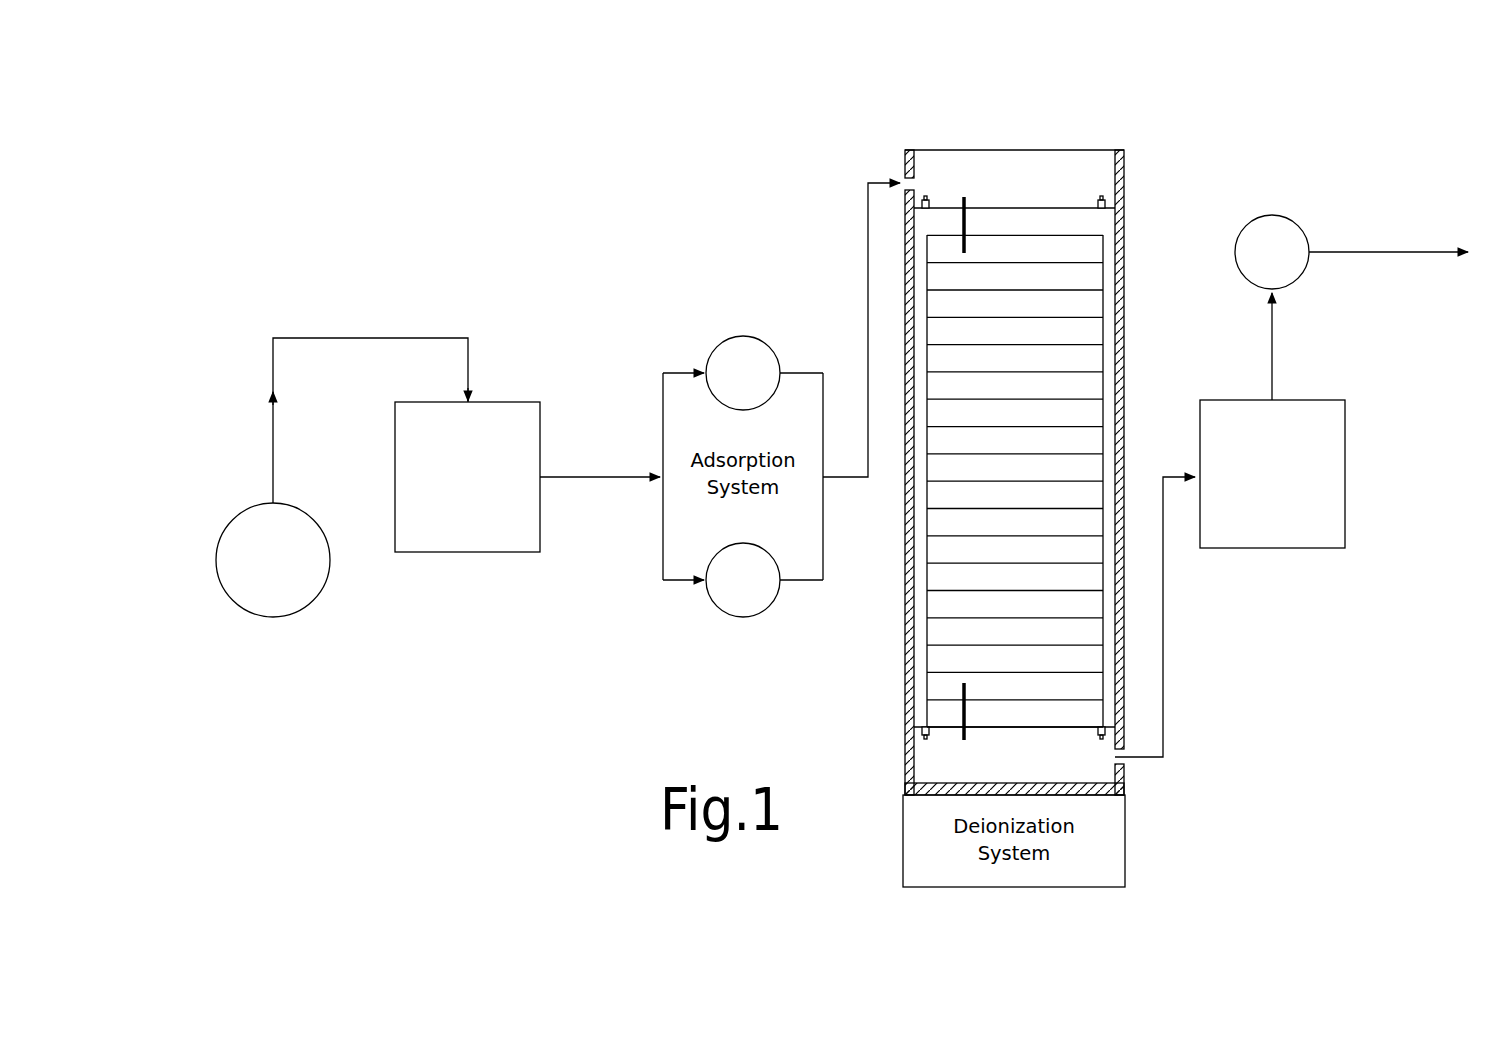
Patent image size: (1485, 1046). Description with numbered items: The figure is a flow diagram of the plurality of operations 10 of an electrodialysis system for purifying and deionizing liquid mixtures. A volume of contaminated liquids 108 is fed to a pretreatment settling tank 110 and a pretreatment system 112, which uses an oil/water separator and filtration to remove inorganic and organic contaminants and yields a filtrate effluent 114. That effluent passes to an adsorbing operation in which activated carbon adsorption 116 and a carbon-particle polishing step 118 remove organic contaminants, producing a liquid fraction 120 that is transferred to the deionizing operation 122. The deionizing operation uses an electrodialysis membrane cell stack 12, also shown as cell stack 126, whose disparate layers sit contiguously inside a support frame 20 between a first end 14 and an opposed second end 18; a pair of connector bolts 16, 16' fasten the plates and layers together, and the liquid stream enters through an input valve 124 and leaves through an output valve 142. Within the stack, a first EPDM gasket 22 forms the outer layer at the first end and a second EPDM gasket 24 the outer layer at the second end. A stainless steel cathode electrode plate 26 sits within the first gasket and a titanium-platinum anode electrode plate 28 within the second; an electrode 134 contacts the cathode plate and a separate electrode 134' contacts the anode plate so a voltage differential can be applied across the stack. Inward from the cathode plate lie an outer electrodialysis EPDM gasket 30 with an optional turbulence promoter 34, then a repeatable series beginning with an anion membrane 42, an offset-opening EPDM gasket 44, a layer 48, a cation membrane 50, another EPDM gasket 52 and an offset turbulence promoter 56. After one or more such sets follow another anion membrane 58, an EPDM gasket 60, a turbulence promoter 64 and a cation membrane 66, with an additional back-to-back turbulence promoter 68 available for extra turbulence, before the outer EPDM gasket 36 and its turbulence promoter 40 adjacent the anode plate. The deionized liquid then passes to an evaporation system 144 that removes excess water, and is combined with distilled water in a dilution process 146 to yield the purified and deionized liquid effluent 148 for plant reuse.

The plurality of operations 10 is at (748, 164).
The electrodialysis membrane cell stack 12 is at (905, 611).
The first end 14 is at (1062, 150).
The connector bolt 16 is at (908, 421).
The connector bolt 16' is at (1135, 427).
The second end 18 is at (906, 790).
The support frame 20 is at (925, 278).
The first EPDM gasket 22 is at (1001, 233).
The second EPDM gasket 24 is at (1001, 725).
The cathode electrode plate 26 is at (1001, 260).
The anode electrode plate 28 is at (1001, 697).
The outer electrodialysis EPDM gasket 30 is at (1001, 288).
The turbulence promoter 34 is at (1001, 315).
The outer electrodialysis EPDM gasket 36 is at (1001, 643).
The turbulence promoter 40 is at (1001, 670).
The anion membrane 42 is at (1001, 370).
The electrodialysis EPDM gasket 44 is at (1001, 397).
The layer 48 is at (1001, 424).
The cation membrane 50 is at (1001, 452).
The electrodialysis EPDM gasket 52 is at (1001, 479).
The turbulence promoter 56 is at (1001, 506).
The anion membrane 58 is at (1001, 534).
The EPDM gasket 60 is at (1001, 561).
The turbulence promoter 64 is at (1001, 588).
The cation membrane 66 is at (1001, 616).
The turbulence promoter 68 is at (1001, 342).
The contaminated liquids 108 is at (220, 506).
The pretreatment settling tank 110 is at (325, 585).
The pretreatment system 112 is at (398, 418).
The filtrate effluent 114 is at (598, 475).
The activated carbon adsorption 116 is at (723, 385).
The polishing step 118 is at (723, 592).
The liquid fraction 120 is at (845, 475).
The deionizing operation 122 is at (977, 131).
The input valve 124 is at (903, 178).
The electrodialysis membrane cell stack 126 is at (1072, 207).
The electrode 134 is at (996, 164).
The electrode 134' is at (881, 711).
The output valve 142 is at (1125, 762).
The evaporation system 144 is at (1330, 512).
The dilution process 146 is at (1290, 236).
The purified and deionized liquid effluent 148 is at (1420, 256).